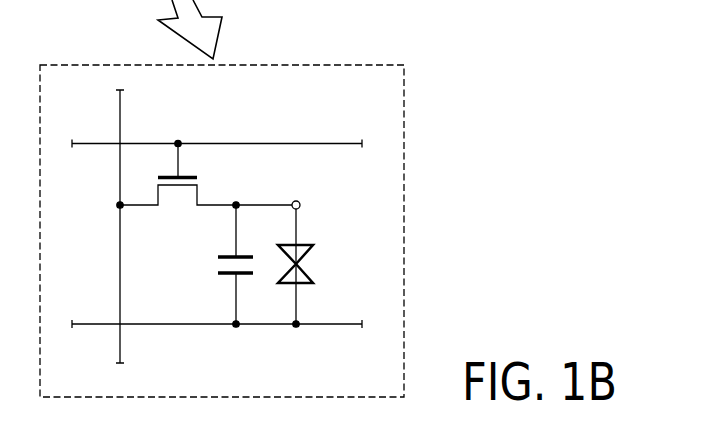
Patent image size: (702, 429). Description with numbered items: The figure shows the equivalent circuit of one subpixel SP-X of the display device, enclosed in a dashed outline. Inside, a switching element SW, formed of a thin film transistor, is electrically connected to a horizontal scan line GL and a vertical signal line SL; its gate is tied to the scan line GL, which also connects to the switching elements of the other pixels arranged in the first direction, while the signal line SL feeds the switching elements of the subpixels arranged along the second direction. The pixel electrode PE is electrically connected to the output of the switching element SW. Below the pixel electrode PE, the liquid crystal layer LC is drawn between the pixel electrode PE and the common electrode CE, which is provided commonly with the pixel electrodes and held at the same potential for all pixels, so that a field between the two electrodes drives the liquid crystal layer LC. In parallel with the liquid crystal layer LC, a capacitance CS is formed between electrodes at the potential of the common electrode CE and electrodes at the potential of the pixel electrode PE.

The subpixel SP-X is at (97, 65).
The signal line SL is at (120, 257).
The scan line GL is at (310, 143).
The common electrode CE is at (323, 325).
The switching element SW is at (213, 188).
The pixel electrode PE is at (300, 206).
The capacitance CS is at (207, 270).
The liquid crystal layer LC is at (315, 270).